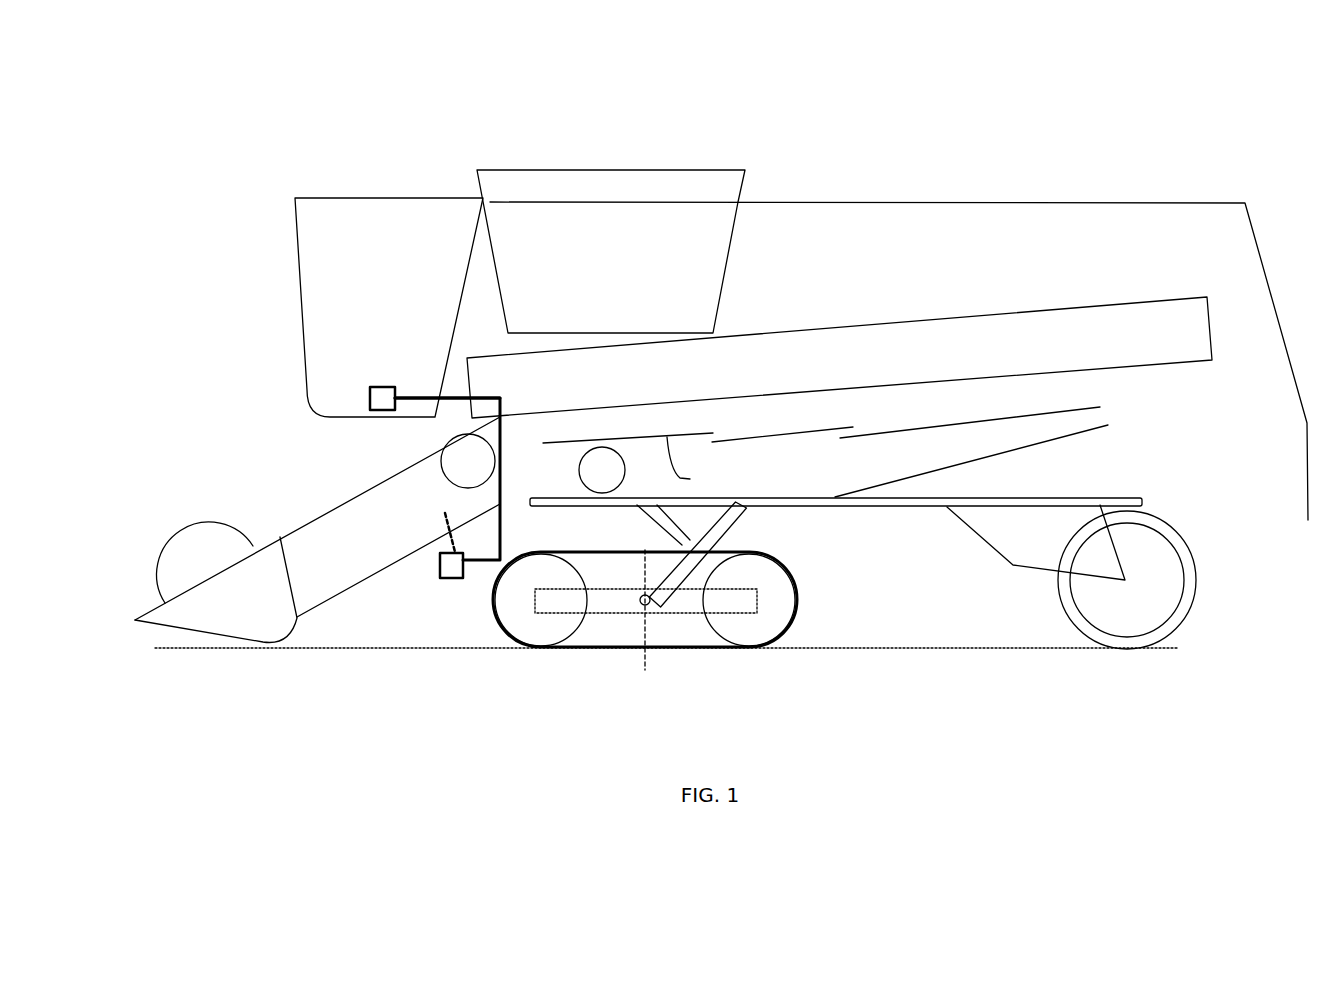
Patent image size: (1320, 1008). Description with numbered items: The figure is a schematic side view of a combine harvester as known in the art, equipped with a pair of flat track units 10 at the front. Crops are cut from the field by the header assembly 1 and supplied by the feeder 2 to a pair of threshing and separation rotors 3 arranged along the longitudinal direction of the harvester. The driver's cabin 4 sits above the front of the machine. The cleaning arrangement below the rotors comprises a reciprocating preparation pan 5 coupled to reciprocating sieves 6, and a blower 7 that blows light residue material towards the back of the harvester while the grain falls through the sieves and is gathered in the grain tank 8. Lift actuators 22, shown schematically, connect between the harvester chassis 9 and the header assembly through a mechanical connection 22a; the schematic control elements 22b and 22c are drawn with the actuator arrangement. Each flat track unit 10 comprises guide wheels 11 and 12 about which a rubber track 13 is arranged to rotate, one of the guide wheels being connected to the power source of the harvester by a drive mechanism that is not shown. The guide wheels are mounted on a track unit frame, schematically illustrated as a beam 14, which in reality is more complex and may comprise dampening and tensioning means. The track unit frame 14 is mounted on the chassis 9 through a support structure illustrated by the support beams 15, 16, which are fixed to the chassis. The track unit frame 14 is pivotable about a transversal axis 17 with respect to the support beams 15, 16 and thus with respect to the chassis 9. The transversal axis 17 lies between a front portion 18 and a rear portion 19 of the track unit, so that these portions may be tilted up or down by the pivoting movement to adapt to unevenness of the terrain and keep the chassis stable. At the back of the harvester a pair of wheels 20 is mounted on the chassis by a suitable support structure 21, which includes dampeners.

The header assembly 1 is at (205, 517).
The feeder 2 is at (368, 518).
The threshing and separation rotors 3 is at (965, 333).
The driver's cabin 4 is at (327, 297).
The reciprocating preparation pan 5 is at (690, 479).
The reciprocating sieves 6 is at (778, 437).
The blower 7 is at (602, 468).
The grain tank 8 is at (637, 240).
The harvester chassis 9 is at (890, 502).
The flat track unit 10 is at (590, 621).
The guide wheel 11 is at (540, 633).
The guide wheel 12 is at (757, 633).
The rubber track 13 is at (602, 550).
The track unit frame 14 is at (610, 598).
The support beam 15 is at (710, 528).
The support beam 16 is at (665, 527).
The transversal axis 17 is at (653, 605).
The front portion 18 is at (636, 662).
The rear portion 19 is at (654, 662).
The wheels 20 is at (1165, 570).
The support structure 21 is at (1110, 550).
The lift actuators 22 is at (440, 568).
The mechanical connection 22a is at (445, 530).
The sensor 22b is at (370, 400).
The connection line 22c is at (490, 398).